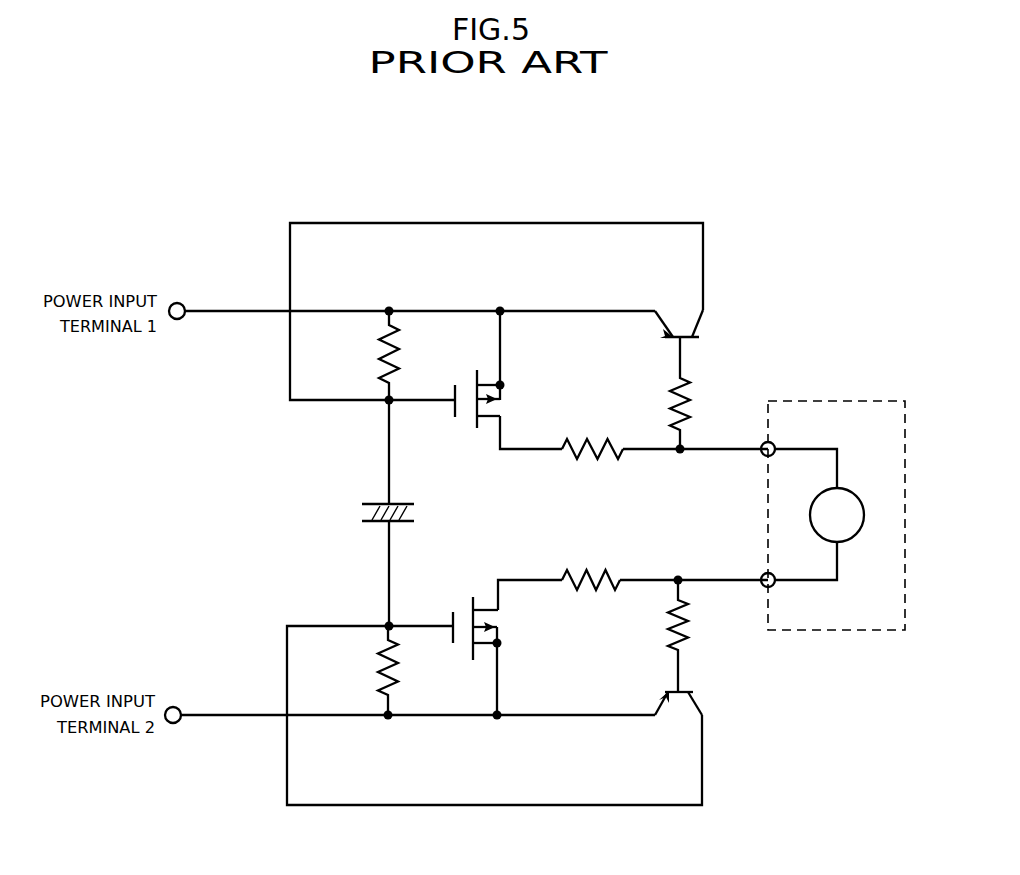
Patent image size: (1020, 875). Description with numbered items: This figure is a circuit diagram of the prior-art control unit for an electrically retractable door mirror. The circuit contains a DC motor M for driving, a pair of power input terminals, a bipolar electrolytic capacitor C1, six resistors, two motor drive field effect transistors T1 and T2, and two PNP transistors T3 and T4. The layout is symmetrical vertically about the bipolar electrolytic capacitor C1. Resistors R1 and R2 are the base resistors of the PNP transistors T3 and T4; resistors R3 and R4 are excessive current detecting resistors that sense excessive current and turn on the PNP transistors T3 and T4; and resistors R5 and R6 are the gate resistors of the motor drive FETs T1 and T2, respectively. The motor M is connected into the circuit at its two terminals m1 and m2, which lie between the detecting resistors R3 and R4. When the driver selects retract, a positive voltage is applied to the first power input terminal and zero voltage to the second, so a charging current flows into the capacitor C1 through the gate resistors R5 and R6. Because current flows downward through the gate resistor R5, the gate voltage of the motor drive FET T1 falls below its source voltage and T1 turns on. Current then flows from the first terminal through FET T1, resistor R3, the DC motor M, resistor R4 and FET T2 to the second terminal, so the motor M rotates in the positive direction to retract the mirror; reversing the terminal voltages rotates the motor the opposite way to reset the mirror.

The base resistor R1 is at (698, 393).
The base resistor R2 is at (697, 636).
The excessive current detecting resistor R3 is at (592, 433).
The excessive current detecting resistor R4 is at (591, 597).
The gate resistor R5 is at (408, 355).
The gate resistor R6 is at (406, 670).
The bipolar electrolytic capacitor C1 is at (368, 510).
The motor drive FET T1 is at (479, 414).
The motor drive FET T2 is at (478, 614).
The PNP transistor T3 is at (691, 327).
The PNP transistor T4 is at (688, 704).
The DC motor M is at (836, 515).
The motor terminal m1 is at (787, 439).
The motor terminal m2 is at (787, 588).